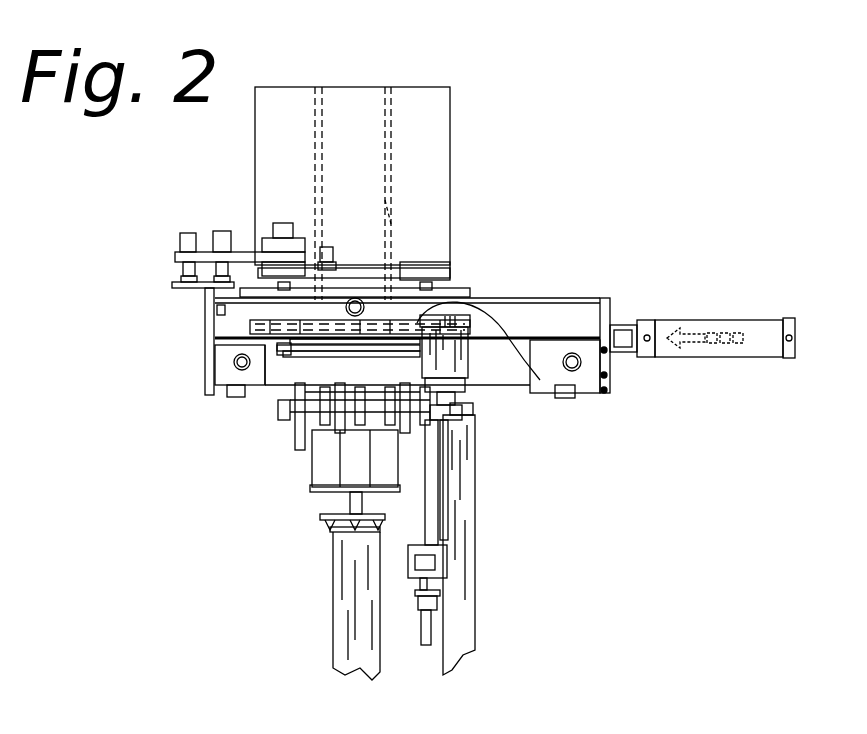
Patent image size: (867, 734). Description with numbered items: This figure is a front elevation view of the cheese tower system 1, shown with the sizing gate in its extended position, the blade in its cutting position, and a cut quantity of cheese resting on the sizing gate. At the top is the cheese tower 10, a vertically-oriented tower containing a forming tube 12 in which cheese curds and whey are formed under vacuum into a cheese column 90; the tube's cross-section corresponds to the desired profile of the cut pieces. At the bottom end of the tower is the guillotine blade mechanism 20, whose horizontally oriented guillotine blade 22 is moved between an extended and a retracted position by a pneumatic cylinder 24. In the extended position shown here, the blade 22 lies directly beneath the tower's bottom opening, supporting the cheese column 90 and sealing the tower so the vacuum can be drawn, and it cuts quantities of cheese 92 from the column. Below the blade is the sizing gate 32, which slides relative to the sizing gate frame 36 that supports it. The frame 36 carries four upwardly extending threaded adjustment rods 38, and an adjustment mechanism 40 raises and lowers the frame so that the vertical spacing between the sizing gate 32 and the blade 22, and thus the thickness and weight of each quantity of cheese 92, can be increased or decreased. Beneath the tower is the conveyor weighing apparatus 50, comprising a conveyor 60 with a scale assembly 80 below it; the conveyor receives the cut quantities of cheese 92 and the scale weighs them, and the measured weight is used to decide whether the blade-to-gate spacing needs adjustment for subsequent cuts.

The cheese tower system 1 is at (492, 93).
The cheese tower 10 is at (450, 165).
The forming tube 12 is at (393, 105).
The guillotine blade mechanism 20 is at (631, 270).
The guillotine blade 22 is at (470, 350).
The pneumatic cylinder 24 is at (685, 320).
The sizing gate 32 is at (297, 355).
The sizing gate frame 36 is at (307, 360).
The threaded adjustment rods 38 is at (250, 325).
The adjustment mechanism 40 is at (204, 212).
The conveyor weighing apparatus 50 is at (556, 577).
The conveyor 60 is at (286, 432).
The scale assembly 80 is at (302, 506).
The cheese column 90 is at (391, 212).
The quantity of cheese 92 is at (347, 343).